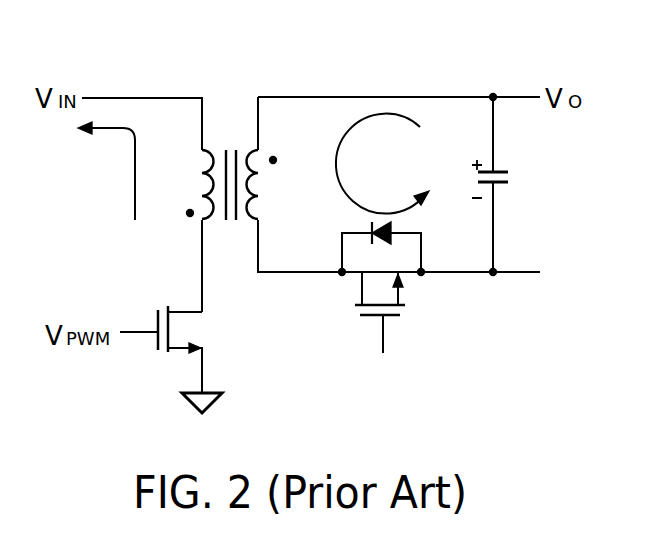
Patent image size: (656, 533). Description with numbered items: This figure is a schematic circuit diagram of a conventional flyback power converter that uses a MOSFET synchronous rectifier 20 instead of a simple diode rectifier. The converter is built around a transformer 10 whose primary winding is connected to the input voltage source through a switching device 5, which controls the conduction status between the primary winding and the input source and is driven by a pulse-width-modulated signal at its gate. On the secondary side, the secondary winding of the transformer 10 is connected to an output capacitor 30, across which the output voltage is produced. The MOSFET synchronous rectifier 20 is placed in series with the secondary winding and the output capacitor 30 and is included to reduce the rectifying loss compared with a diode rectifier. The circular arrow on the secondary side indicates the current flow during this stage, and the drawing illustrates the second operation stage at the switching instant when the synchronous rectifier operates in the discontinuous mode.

The transformer 10 is at (232, 142).
The switching device 5 is at (155, 305).
The MOSFET synchronous rectifier 20 is at (404, 311).
The output capacitor 30 is at (512, 177).